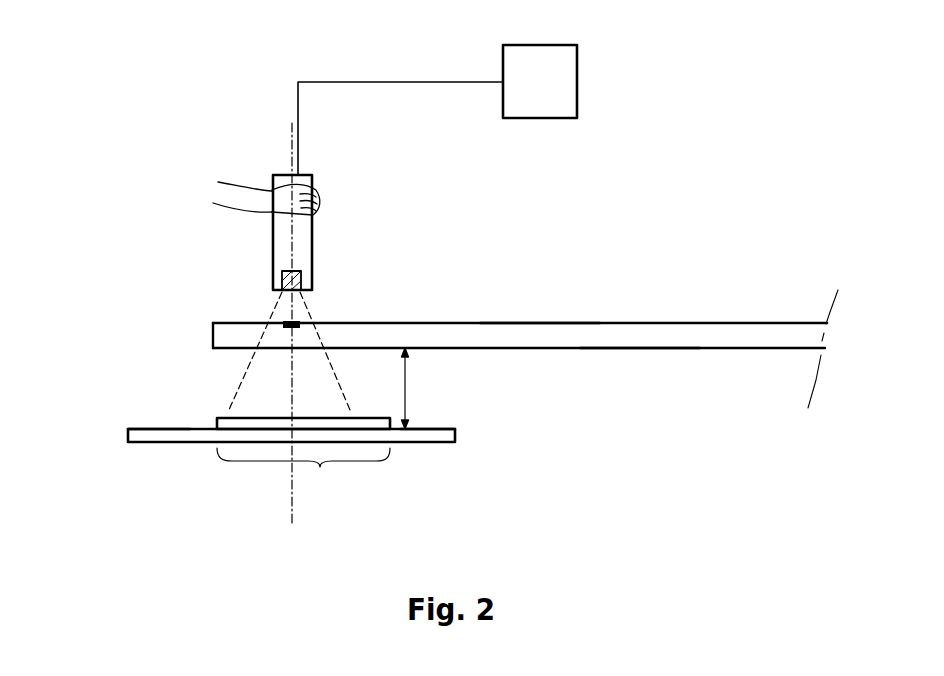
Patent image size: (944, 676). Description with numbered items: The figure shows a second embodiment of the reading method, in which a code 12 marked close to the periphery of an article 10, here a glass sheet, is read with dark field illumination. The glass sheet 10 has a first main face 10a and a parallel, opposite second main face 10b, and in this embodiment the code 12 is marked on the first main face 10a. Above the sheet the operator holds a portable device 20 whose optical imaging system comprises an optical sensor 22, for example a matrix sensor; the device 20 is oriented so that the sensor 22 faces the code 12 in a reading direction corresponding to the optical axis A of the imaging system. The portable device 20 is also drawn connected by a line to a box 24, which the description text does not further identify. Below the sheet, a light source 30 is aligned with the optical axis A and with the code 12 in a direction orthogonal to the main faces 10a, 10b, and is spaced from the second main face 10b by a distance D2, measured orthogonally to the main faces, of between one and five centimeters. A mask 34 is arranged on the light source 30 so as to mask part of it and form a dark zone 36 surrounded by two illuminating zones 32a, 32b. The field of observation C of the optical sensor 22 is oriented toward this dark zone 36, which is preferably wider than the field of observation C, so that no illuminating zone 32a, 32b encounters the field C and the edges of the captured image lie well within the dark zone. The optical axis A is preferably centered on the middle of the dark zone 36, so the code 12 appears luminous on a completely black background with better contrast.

The article 10 is at (672, 314).
The first main face 10a is at (547, 314).
The second main face 10b is at (637, 357).
The code 12 is at (282, 323).
The portable device 20 is at (322, 171).
The optical sensor 22 is at (282, 277).
The evaluation / control unit 24 is at (558, 98).
The light source 30 is at (471, 435).
The illuminating zone 32a is at (148, 419).
The illuminating zone 32b is at (447, 420).
The mask 34 is at (370, 418).
The dark zone 36 is at (303, 478).
The optical axis A is at (291, 342).
The field of observation C is at (245, 382).
The distance D2 is at (432, 388).